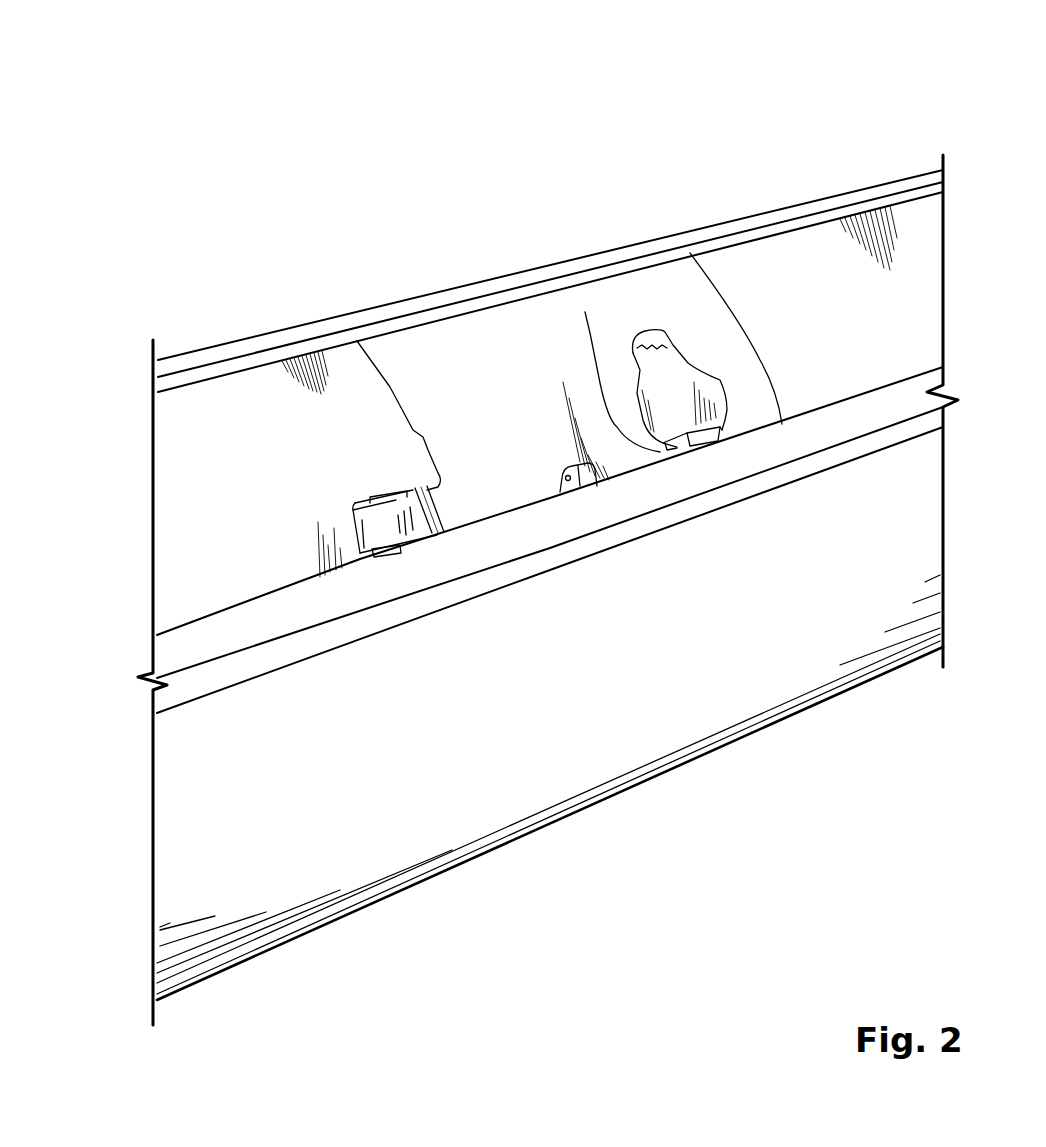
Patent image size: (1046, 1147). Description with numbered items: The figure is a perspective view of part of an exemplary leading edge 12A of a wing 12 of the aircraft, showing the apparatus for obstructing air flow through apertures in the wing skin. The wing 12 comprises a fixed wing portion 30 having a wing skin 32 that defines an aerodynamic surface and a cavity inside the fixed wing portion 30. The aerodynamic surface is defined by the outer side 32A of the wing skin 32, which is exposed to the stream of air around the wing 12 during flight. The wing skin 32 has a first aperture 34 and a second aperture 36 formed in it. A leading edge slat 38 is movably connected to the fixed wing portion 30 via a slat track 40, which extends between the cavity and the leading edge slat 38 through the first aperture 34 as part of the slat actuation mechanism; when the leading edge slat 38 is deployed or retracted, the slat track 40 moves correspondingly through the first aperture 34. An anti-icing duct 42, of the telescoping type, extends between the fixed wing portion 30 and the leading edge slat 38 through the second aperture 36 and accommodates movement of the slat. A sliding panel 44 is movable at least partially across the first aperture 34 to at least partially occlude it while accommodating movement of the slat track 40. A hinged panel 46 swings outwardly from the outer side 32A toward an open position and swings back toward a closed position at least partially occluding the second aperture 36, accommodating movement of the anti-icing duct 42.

The wing 12 is at (313, 110).
The leading edge 12A is at (500, 579).
The fixed wing portion 30 is at (458, 332).
The wing skin 32 is at (550, 501).
The outer side 32A is at (550, 501).
The first aperture 34 is at (358, 522).
The second aperture 36 is at (699, 375).
The leading edge slat 38 is at (385, 845).
The slat track 40 is at (390, 550).
The anti-icing duct 42 is at (585, 312).
The sliding panel 44 is at (390, 520).
The hinged panel 46 is at (673, 377).